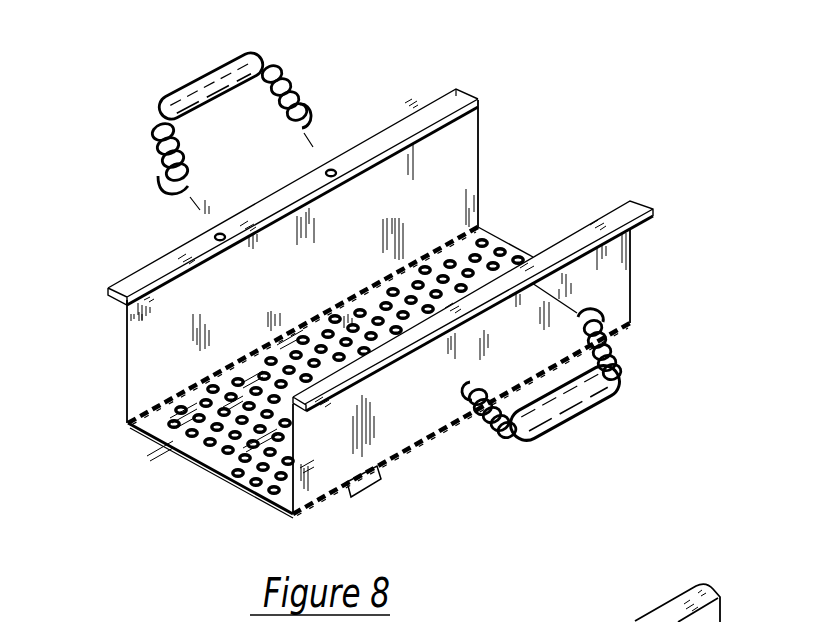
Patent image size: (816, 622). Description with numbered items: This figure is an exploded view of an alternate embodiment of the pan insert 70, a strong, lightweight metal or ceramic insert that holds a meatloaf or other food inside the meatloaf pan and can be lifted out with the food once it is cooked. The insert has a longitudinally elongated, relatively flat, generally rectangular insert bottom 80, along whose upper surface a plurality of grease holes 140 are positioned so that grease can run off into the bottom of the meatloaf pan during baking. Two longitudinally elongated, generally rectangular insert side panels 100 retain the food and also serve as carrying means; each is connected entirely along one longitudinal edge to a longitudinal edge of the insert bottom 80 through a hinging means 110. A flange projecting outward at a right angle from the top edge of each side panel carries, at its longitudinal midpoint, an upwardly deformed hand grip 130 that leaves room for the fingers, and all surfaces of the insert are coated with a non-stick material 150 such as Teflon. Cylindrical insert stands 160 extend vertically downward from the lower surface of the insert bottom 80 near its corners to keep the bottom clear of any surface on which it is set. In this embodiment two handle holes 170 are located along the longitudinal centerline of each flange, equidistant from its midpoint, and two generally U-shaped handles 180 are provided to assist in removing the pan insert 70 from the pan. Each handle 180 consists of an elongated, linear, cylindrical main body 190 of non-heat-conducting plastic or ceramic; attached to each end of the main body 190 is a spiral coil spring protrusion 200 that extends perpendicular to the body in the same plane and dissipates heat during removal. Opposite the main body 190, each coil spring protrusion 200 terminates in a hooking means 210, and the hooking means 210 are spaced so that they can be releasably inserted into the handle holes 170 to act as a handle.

The pan insert 70 is at (402, 324).
The insert bottom 80 is at (515, 250).
The insert side panel 100 is at (470, 93).
The hinging means 110 is at (150, 413).
The hand grip 130 is at (283, 196).
The grease holes 140 is at (190, 430).
The non-stick material 150 is at (140, 336).
The insert stand 160 is at (368, 496).
The handle holes 170 is at (210, 236).
The handle 180 is at (339, 233).
The main body 190 is at (240, 78).
The coil spring protrusion 200 is at (153, 145).
The hooking means 210 is at (295, 122).